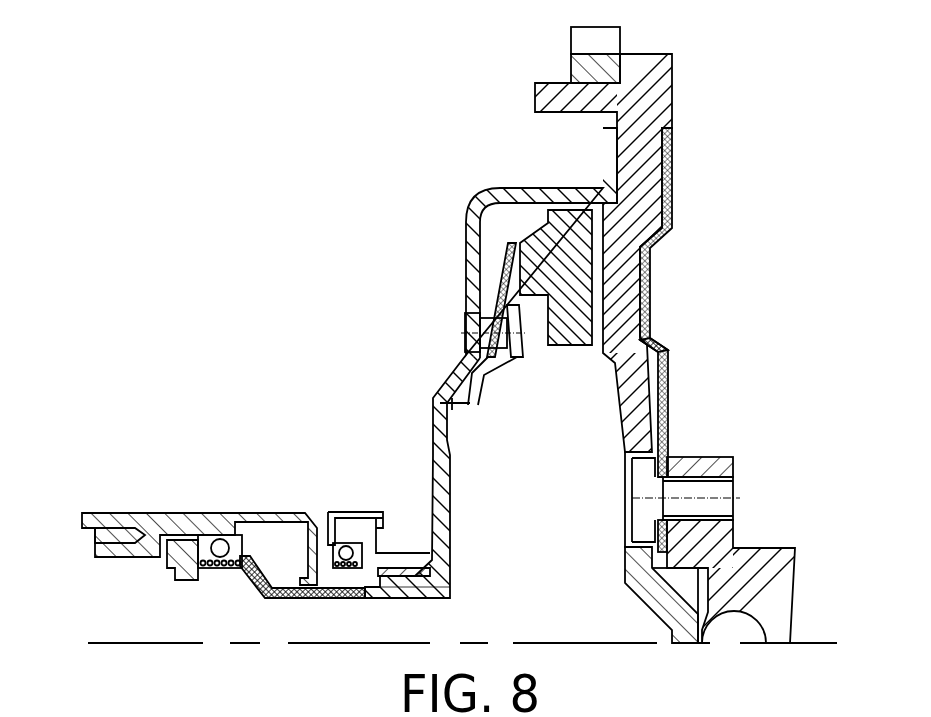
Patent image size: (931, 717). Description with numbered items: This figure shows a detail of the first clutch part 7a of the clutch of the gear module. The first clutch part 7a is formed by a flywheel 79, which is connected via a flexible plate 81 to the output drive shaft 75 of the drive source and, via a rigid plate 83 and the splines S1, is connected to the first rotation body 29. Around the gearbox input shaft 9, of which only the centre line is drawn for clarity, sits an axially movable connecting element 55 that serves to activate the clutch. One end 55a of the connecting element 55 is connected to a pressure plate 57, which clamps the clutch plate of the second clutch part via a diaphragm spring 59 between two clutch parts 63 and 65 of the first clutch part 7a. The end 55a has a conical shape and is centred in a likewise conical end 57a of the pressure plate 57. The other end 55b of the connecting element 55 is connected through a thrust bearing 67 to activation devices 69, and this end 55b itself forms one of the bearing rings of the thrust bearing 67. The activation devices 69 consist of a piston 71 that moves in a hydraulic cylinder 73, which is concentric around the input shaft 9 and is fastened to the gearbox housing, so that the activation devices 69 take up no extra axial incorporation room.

The first clutch part 7a is at (676, 87).
The flywheel 79 is at (635, 80).
The rigid plate 83 is at (502, 197).
The diaphragm spring 59 is at (490, 268).
The clutch part 63 is at (585, 227).
The clutch part 65 is at (618, 277).
The flexible plate 81 is at (668, 350).
The output drive shaft 75 is at (773, 547).
The pressure plate 57 is at (435, 418).
The conical end of pressure plate 57a is at (388, 598).
The thrust bearing 67 is at (220, 538).
The activation devices 69 is at (150, 511).
The piston 71 is at (145, 533).
The hydraulic cylinder 73 is at (200, 580).
The connecting element 55 is at (260, 592).
The end of connecting element 55a is at (355, 598).
The other end of connecting element 55b is at (233, 570).
The first rotation body 29 is at (355, 528).
The splines S1 is at (400, 572).
The gearbox input shaft 9 is at (150, 642).